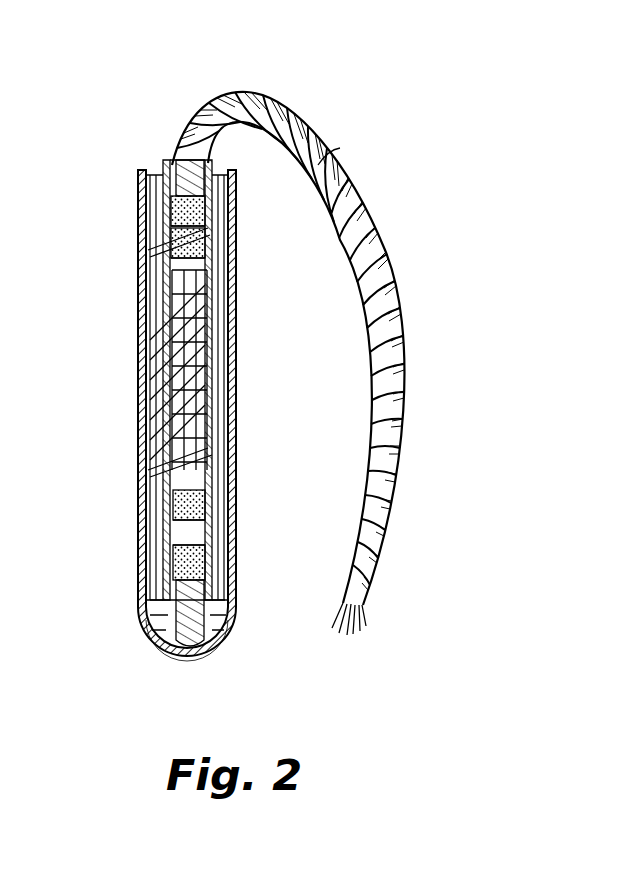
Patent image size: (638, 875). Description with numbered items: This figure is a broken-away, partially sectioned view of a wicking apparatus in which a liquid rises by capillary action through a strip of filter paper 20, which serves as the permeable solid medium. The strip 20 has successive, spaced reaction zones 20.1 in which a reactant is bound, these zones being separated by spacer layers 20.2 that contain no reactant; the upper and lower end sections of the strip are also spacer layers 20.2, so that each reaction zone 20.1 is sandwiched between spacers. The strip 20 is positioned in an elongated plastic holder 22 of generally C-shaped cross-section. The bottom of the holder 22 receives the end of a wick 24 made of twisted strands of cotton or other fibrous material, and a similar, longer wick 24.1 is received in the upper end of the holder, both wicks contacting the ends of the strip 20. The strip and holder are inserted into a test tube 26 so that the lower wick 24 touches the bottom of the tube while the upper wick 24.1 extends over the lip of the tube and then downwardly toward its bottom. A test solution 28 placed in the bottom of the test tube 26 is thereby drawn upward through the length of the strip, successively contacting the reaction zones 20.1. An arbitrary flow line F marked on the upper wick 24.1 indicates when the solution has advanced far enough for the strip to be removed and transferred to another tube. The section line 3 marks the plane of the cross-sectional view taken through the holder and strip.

The filter paper strip 20 is at (146, 213).
The reaction zone 20.1 is at (160, 242).
The spacer layer 20.2 is at (185, 207).
The plastic holder 22 is at (210, 577).
The wick 24 is at (160, 625).
The upper wick 24.1 is at (232, 95).
The test tube 26 is at (138, 303).
The test solution 28 is at (213, 635).
The flow line F is at (335, 152).
The section line 3 is at (102, 540).